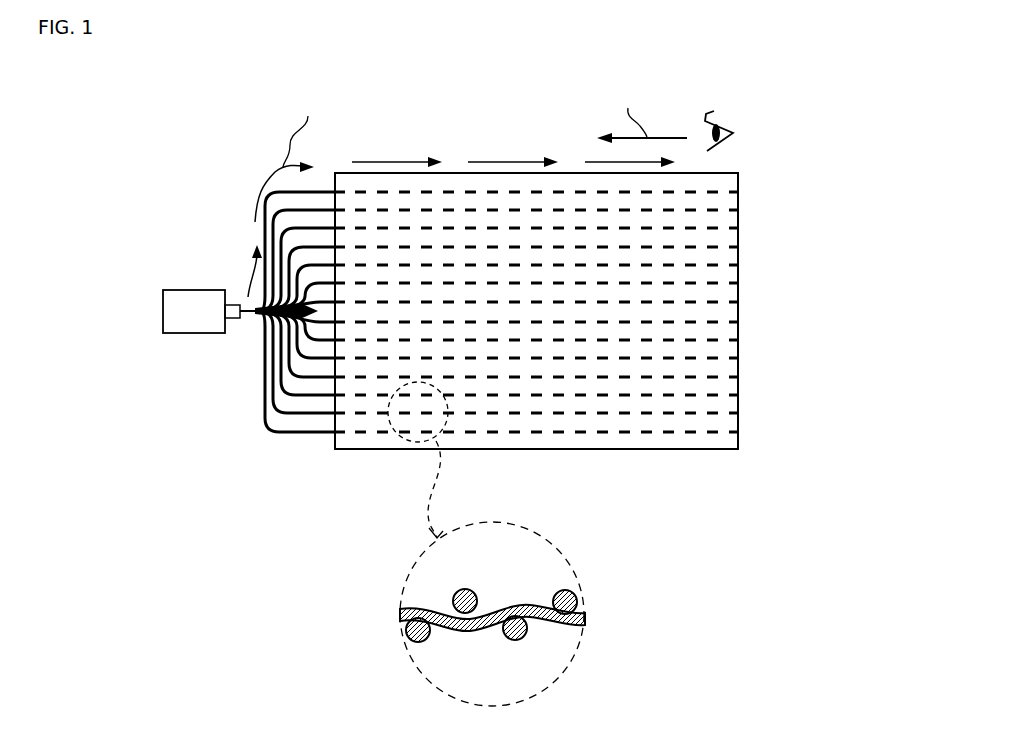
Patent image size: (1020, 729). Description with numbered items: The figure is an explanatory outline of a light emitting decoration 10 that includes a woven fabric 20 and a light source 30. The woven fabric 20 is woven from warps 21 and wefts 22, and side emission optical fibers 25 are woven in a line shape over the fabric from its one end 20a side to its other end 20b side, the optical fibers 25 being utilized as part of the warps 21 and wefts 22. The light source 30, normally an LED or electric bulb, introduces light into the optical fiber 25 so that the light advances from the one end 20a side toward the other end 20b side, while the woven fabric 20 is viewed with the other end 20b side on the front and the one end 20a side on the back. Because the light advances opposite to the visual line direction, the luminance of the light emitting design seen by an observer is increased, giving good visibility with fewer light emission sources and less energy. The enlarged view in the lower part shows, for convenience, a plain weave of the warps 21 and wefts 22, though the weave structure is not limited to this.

The light emitting decoration 10 is at (222, 160).
The light source 30 is at (202, 290).
The woven fabric 20 is at (487, 440).
The one end 20a is at (330, 440).
The other end 20b is at (740, 437).
The side emission optical fiber 25 is at (560, 434).
The warps 21 is at (410, 641).
The wefts 22 is at (572, 626).